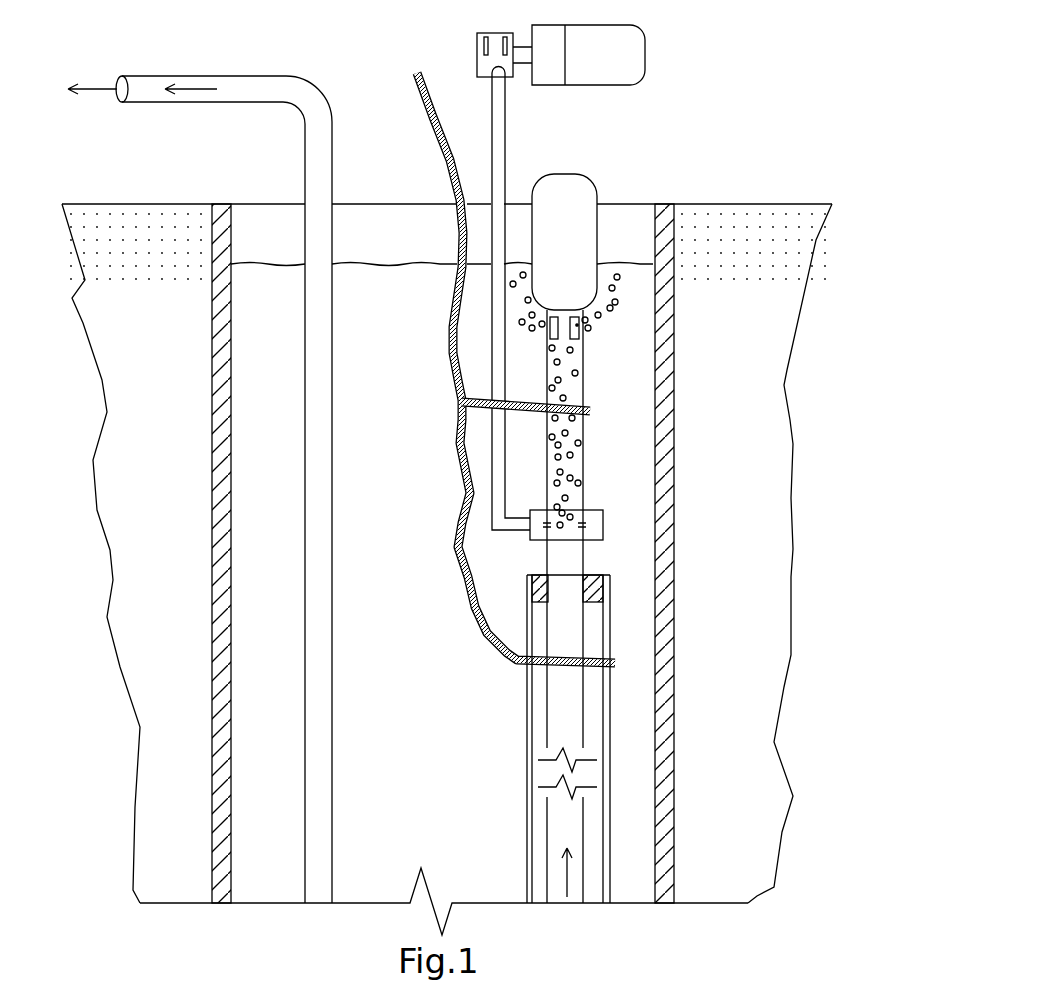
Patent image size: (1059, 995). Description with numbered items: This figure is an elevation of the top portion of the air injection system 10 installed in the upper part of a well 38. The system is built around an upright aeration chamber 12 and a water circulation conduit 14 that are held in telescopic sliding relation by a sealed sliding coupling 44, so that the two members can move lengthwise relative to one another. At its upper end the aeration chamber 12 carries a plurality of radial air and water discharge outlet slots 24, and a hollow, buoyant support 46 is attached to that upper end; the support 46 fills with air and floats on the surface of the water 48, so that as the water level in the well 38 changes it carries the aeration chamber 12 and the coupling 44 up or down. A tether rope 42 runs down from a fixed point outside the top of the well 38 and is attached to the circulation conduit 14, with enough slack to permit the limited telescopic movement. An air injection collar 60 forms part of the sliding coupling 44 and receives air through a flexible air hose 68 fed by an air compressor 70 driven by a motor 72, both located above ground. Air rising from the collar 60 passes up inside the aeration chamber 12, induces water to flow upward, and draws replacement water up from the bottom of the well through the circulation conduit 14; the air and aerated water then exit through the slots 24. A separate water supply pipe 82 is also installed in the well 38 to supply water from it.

The air injection system 10 is at (427, 361).
The aeration chamber 12 is at (557, 382).
The water circulation conduit 14 is at (527, 738).
The radial air and water discharge outlet slots 24 is at (555, 333).
The well 38 is at (232, 652).
The tether rope 42 is at (457, 157).
The sealed sliding coupling 44 is at (540, 590).
The hollow support 46 is at (572, 187).
The surface of the water 48 is at (292, 263).
The air injection collar 60 is at (533, 525).
The flexible air hose 68 is at (495, 460).
The air compressor 70 is at (477, 53).
The motor 72 is at (590, 60).
The water supply pipe 82 is at (333, 168).